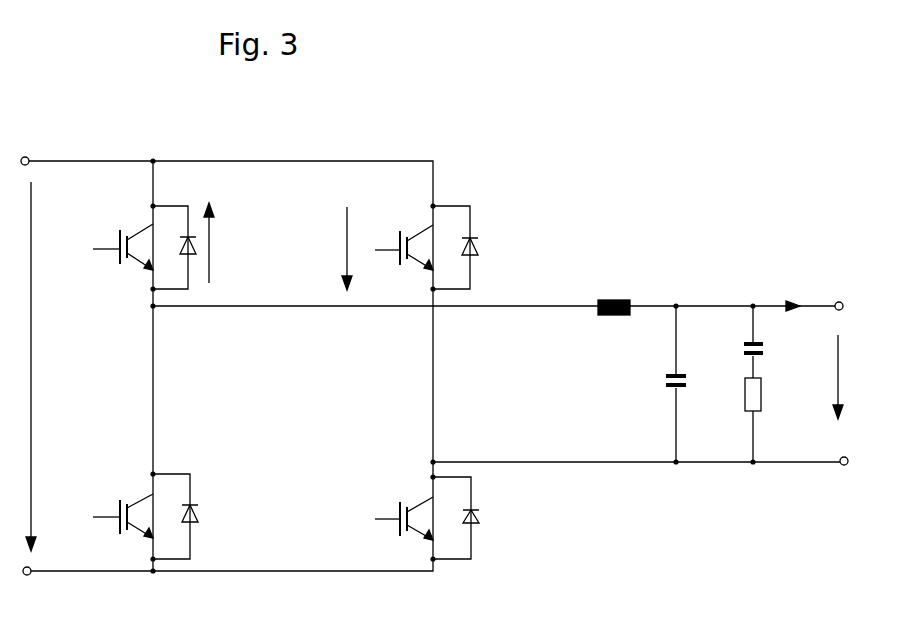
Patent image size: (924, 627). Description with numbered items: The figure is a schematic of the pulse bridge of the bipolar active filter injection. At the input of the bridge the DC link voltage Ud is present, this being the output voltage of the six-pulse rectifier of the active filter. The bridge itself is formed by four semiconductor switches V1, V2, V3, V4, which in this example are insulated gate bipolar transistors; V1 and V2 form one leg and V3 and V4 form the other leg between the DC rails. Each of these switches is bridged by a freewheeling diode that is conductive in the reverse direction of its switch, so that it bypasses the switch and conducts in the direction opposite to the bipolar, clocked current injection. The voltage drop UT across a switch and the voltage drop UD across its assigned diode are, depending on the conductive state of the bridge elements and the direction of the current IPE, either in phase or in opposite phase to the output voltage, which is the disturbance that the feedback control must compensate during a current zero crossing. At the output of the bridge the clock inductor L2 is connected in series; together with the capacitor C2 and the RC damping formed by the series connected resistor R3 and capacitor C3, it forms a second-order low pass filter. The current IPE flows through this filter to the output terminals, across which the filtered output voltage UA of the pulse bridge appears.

The semiconductor switch V1 is at (134, 247).
The semiconductor switch V2 is at (135, 516).
The semiconductor switch V3 is at (415, 247).
The semiconductor switch V4 is at (416, 518).
The clock inductor L2 is at (613, 301).
The capacitor C2 is at (676, 384).
The damping capacitor C3 is at (753, 342).
The damping resistor R3 is at (760, 420).
The DC link voltage Ud is at (45, 366).
The voltage drop across diode UD is at (223, 243).
The voltage drop across circuit element UT is at (327, 248).
The current IPE is at (793, 293).
The output voltage UA is at (856, 377).